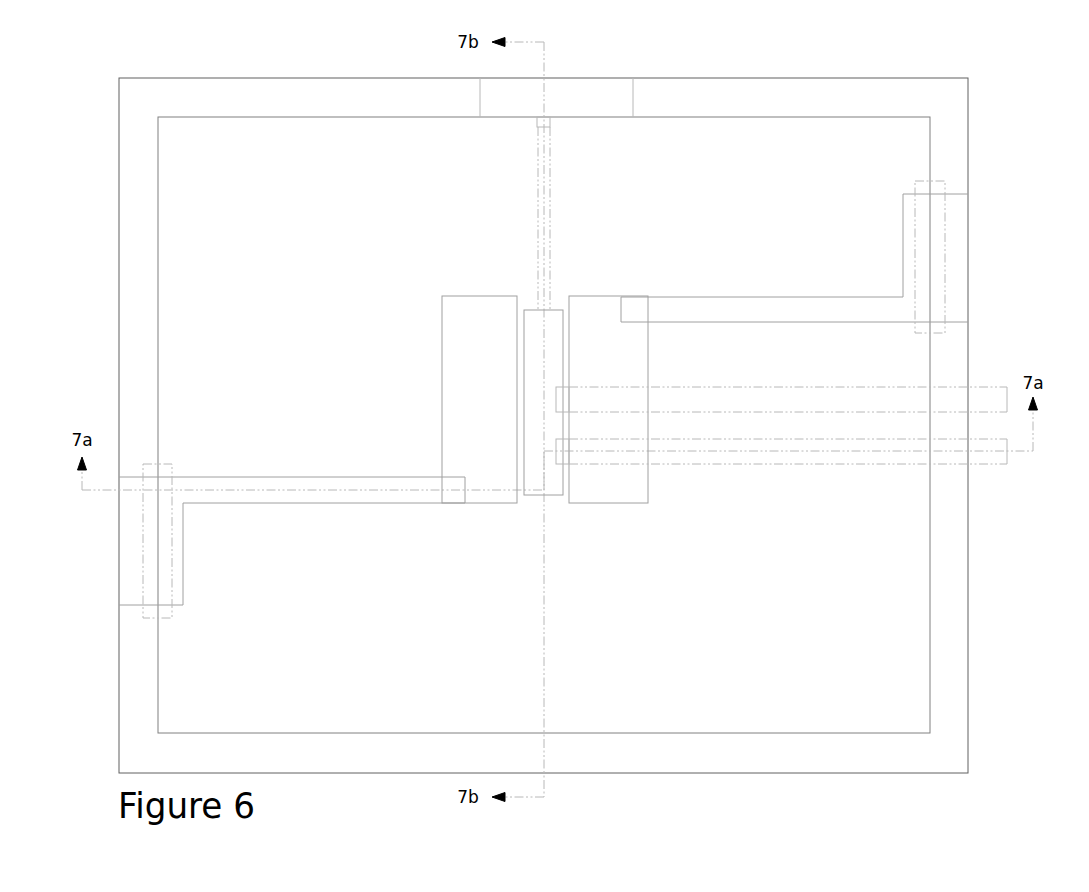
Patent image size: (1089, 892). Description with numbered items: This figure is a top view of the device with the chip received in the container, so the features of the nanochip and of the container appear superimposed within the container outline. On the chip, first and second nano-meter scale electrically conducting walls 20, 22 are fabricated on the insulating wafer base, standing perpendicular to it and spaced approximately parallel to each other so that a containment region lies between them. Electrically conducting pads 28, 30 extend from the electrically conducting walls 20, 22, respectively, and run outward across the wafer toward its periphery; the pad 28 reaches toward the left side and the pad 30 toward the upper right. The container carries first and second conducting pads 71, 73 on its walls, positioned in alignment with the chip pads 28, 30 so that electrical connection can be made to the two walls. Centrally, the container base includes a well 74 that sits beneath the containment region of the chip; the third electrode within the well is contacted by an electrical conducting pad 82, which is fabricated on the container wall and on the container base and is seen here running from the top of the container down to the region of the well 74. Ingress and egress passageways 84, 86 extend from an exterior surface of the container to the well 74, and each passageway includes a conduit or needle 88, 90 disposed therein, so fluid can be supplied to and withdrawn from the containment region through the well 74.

The first electrically conducting wall 20 is at (471, 378).
The second electrically conducting wall 22 is at (597, 320).
The electrically conducting pad 28 is at (275, 488).
The electrically conducting pad 30 is at (672, 310).
The first conducting pad 71 is at (125, 527).
The second conducting pad 73 is at (955, 218).
The well 74 is at (525, 340).
The electrical conducting pad 82 is at (537, 148).
The ingress passageway 84 is at (760, 462).
The egress passageway 86 is at (686, 387).
The conduit or needle 88 is at (985, 455).
The conduit or needle 90 is at (987, 398).